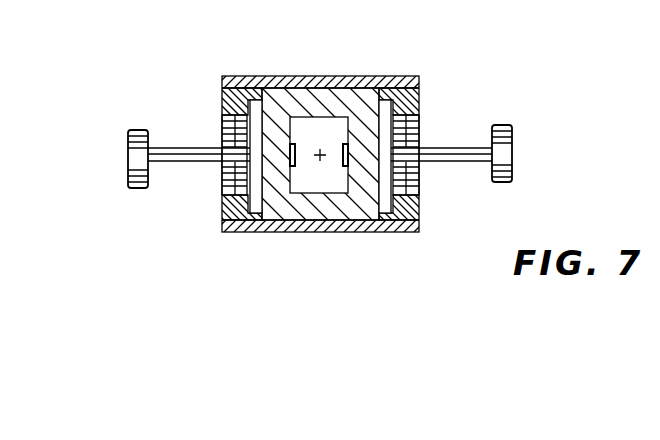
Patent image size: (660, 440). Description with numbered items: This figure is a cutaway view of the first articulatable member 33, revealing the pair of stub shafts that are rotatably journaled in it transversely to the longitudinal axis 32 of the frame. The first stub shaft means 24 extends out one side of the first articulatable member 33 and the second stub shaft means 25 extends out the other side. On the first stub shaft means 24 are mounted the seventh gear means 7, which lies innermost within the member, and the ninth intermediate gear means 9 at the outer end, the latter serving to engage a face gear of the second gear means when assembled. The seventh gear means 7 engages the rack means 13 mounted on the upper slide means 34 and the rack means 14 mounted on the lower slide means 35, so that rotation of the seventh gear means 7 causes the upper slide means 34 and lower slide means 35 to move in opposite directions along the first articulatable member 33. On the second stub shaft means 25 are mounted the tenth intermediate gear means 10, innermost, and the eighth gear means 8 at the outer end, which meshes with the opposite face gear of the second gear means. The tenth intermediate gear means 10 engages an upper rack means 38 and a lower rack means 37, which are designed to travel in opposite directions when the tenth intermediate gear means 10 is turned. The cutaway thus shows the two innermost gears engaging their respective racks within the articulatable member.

The seventh gear means 7 is at (222, 134).
The eighth gear means 8 is at (513, 133).
The ninth intermediate gear means 9 is at (128, 149).
The tenth intermediate gear means 10 is at (420, 132).
The rack means 13 is at (223, 121).
The rack means 14 is at (230, 187).
The first stub shaft means 24 is at (163, 150).
The second stub shaft means 25 is at (455, 163).
The longitudinal axis 32 is at (322, 156).
The first articulatable member 33 is at (287, 74).
The upper slide means 34 is at (365, 90).
The lower slide means 35 is at (323, 232).
The lower rack means 37 is at (420, 190).
The upper rack means 38 is at (413, 122).